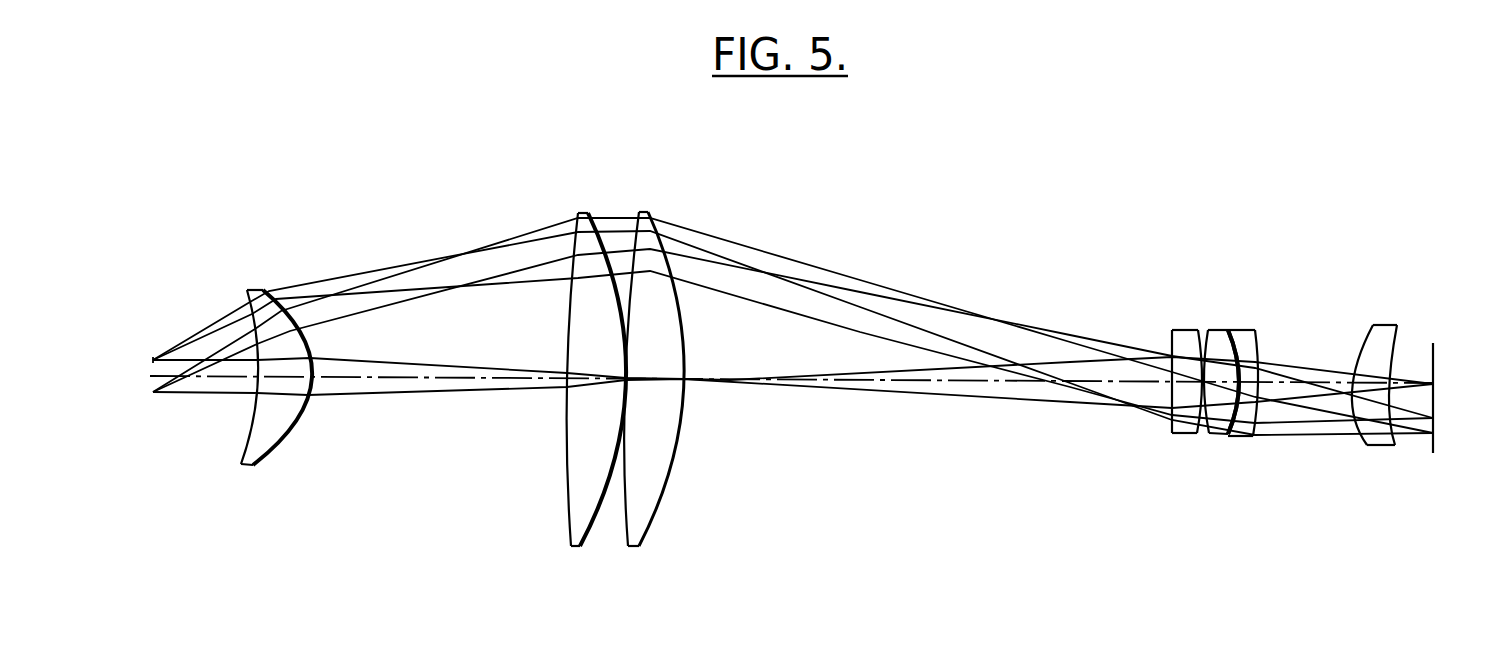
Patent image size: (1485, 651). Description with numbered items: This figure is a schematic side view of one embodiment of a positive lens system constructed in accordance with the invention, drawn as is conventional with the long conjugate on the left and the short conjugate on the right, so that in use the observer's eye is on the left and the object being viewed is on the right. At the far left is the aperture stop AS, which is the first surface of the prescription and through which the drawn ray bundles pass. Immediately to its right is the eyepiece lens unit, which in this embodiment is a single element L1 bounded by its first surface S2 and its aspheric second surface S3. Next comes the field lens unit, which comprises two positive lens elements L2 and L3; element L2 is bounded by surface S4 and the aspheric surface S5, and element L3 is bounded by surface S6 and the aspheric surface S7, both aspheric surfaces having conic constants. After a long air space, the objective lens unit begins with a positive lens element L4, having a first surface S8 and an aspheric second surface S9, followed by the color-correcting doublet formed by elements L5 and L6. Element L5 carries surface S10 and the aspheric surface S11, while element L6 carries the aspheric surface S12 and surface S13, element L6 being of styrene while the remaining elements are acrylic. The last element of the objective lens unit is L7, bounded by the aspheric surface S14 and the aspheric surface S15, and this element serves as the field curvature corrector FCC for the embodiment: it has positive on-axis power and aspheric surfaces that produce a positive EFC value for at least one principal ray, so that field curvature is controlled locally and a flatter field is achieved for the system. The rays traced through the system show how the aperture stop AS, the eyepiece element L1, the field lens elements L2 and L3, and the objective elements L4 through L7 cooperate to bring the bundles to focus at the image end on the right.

The aperture stop AS is at (147, 360).
The eyepiece lens element L1 is at (268, 354).
The positive field lens element L2 is at (555, 378).
The positive field lens element L3 is at (690, 378).
The positive lens element L4 is at (1135, 378).
The color-correcting doublet element L5 is at (1211, 378).
The color-correcting doublet element L6 is at (1288, 376).
The field curvature corrector lens element L7 is at (1396, 390).
The lens surface S2 is at (246, 437).
The aspheric lens surface S3 is at (289, 437).
The lens surface S4 is at (567, 487).
The aspheric lens surface with conic constant S5 is at (588, 546).
The lens surface S6 is at (628, 546).
The aspheric lens surface with conic constant S7 is at (663, 489).
The lens surface S8 is at (1172, 383).
The aspheric lens surface S9 is at (1198, 436).
The lens surface S10 is at (1208, 330).
The aspheric lens surface with conic constant S11 is at (1233, 438).
The aspheric lens surface S12 is at (1245, 352).
The lens surface S13 is at (1257, 437).
The aspheric lens surface S14 is at (1360, 440).
The aspheric lens surface with conic constant S15 is at (1405, 430).
The field curvature corrector FCC is at (1384, 350).